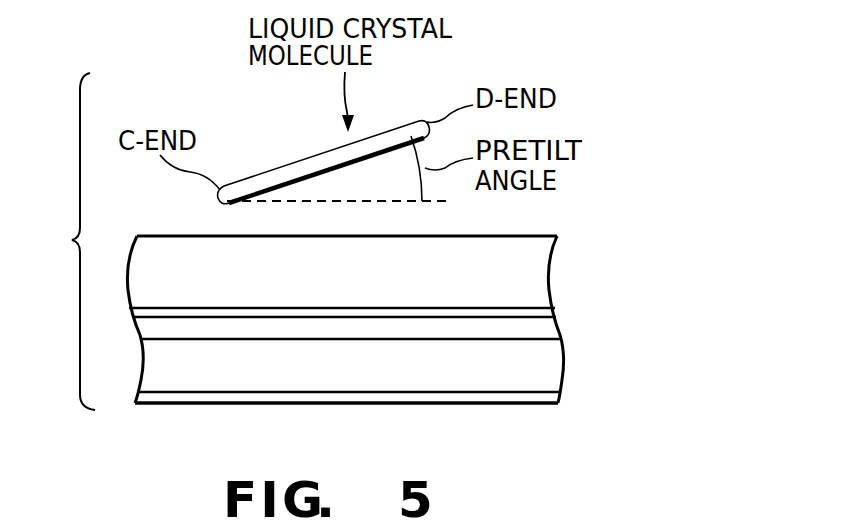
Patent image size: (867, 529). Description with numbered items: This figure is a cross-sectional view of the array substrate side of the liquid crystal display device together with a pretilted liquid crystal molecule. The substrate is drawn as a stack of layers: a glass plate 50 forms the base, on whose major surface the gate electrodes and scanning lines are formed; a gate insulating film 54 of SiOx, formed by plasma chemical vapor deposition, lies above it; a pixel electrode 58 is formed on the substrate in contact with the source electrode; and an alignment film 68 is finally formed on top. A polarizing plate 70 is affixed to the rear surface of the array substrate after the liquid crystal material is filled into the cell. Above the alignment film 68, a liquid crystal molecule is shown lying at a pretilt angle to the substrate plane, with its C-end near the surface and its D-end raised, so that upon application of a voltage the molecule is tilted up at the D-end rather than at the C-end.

The alignment film 68 is at (540, 272).
The pixel electrode 58 is at (547, 310).
The gate insulating film 54 is at (553, 331).
The glass plate 50 is at (556, 365).
The polarizing plate 70 is at (553, 397).